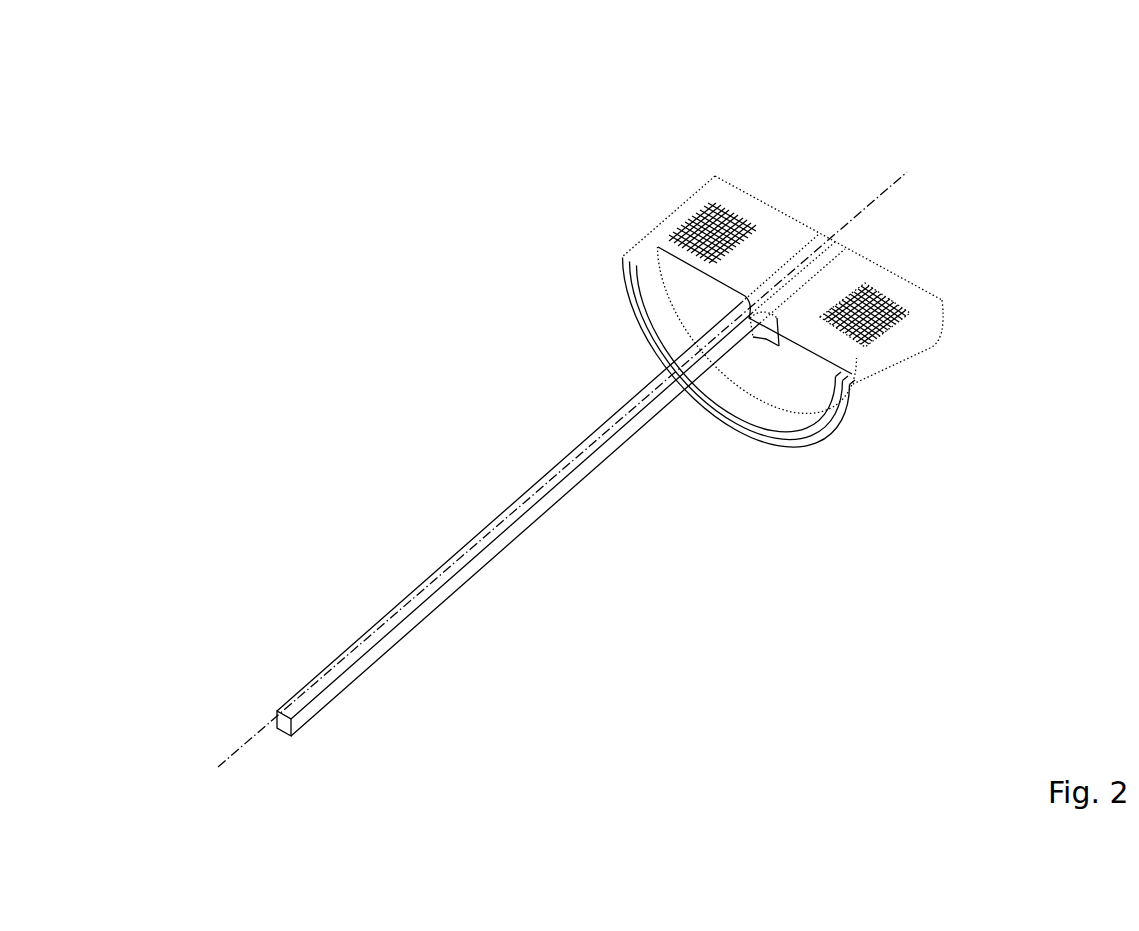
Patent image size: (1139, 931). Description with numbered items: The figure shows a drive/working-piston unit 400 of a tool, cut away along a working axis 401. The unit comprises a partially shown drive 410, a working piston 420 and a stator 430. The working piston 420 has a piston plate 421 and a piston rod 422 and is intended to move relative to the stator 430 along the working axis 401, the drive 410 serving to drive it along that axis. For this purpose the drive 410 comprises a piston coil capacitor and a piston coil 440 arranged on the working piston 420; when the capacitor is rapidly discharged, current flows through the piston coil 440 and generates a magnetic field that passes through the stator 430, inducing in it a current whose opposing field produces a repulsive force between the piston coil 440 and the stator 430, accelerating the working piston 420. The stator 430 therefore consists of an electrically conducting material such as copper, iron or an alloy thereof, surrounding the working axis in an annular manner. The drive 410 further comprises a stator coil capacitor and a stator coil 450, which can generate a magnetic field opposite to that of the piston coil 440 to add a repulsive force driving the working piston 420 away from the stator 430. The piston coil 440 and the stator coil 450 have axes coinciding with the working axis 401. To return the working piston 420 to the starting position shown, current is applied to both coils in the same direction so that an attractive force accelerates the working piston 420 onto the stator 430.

The drive/working-piston unit 400 is at (265, 128).
The working axis 401 is at (887, 179).
The drive 410 is at (972, 487).
The working piston 420 is at (653, 657).
The piston plate 421 is at (795, 370).
The piston rod 422 is at (608, 452).
The stator 430 is at (834, 272).
The piston coil 440 is at (860, 338).
The stator coil 450 is at (882, 312).